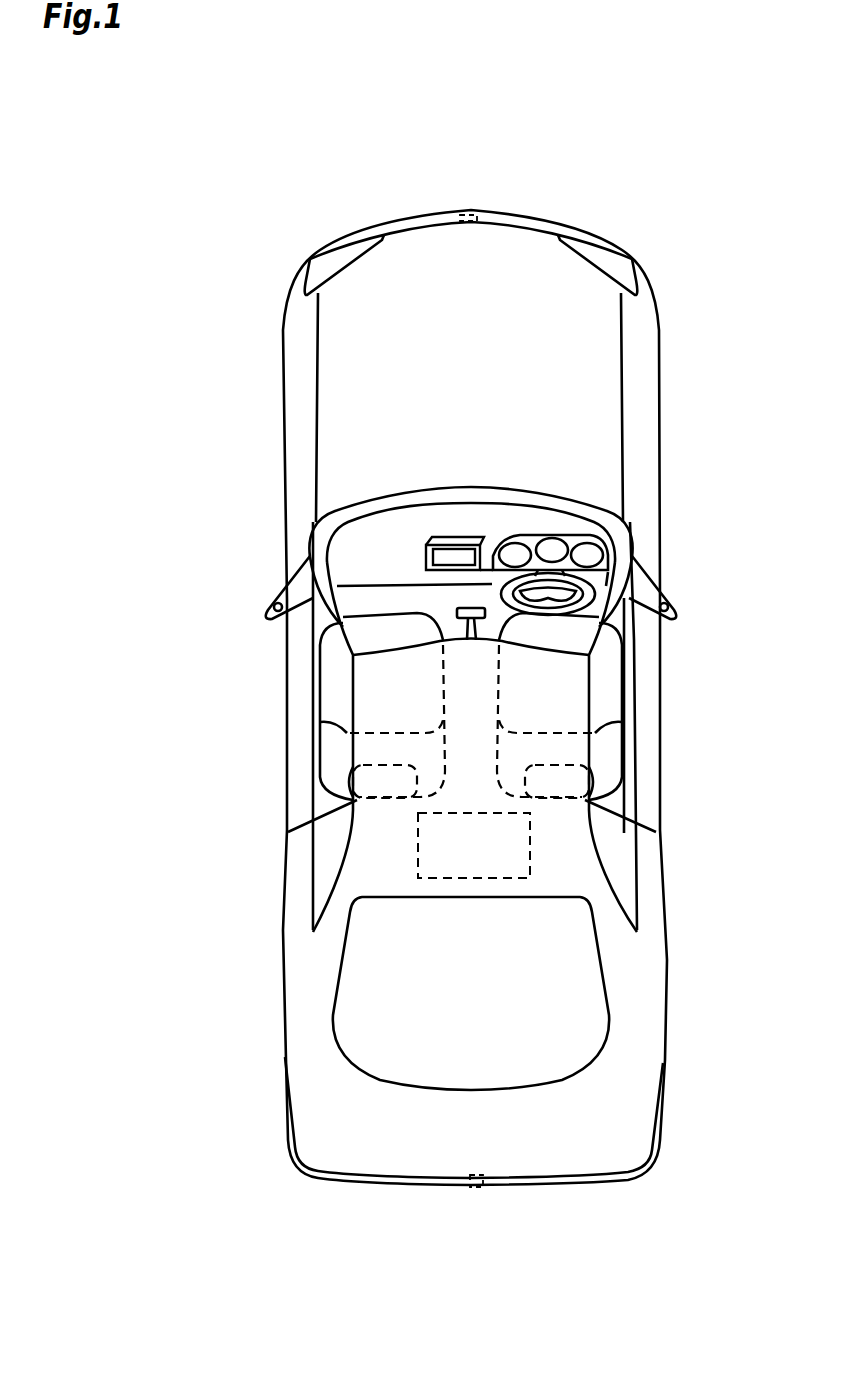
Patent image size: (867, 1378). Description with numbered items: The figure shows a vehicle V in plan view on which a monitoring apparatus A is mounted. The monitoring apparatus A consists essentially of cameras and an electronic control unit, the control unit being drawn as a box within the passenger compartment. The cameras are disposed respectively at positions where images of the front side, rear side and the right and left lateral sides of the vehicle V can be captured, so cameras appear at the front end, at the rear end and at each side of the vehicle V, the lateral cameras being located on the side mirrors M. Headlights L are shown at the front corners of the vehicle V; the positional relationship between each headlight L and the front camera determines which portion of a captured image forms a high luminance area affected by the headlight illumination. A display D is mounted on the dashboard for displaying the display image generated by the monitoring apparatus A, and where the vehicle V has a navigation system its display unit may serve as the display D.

The vehicle V is at (662, 480).
The headlight L is at (318, 270).
The side mirror M is at (282, 597).
The display D is at (462, 553).
The monitoring apparatus A is at (445, 878).